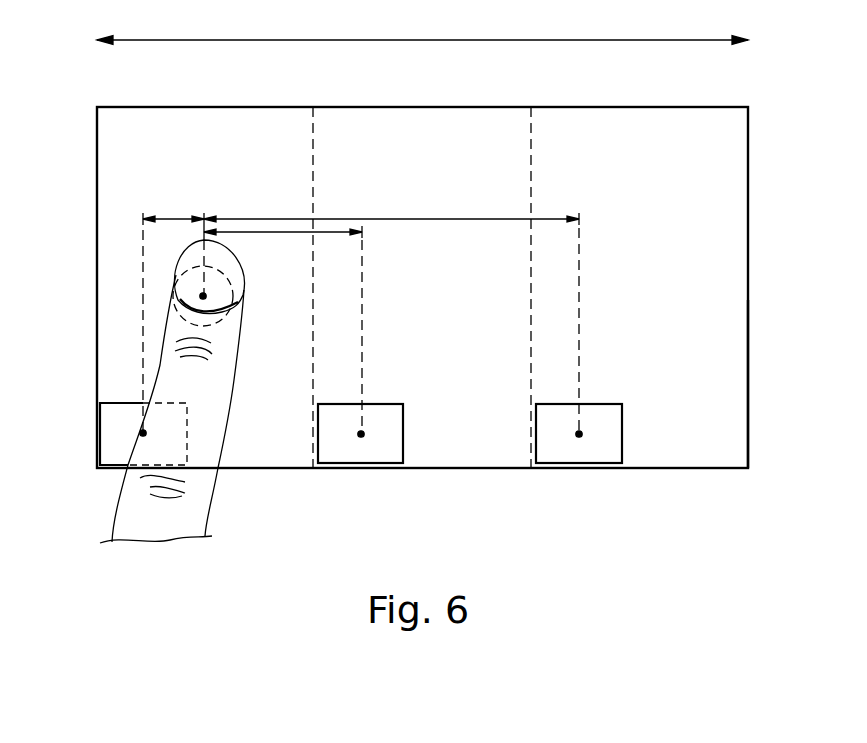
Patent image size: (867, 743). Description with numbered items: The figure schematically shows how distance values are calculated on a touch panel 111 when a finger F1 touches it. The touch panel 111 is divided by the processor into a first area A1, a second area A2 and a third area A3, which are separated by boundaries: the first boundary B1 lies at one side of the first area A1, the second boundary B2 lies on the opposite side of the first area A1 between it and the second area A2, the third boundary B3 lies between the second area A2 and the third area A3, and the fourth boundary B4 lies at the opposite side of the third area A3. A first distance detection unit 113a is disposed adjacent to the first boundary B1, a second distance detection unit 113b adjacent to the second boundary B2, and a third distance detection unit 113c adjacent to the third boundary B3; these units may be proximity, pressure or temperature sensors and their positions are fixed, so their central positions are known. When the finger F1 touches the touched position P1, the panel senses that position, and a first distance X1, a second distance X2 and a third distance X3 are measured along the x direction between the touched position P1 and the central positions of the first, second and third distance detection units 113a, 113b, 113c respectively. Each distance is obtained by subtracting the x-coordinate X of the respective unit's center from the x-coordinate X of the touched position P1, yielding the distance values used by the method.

The touch panel 111 is at (472, 122).
The first area A1 is at (225, 158).
The second area A2 is at (441, 158).
The third area A3 is at (659, 158).
The x-coordinate X is at (422, 27).
The first distance X1 is at (173, 310).
The second distance X2 is at (283, 330).
The third distance X3 is at (391, 311).
The finger F1 is at (165, 368).
The touched position P1 is at (203, 296).
The first boundary B1 is at (96, 458).
The second boundary B2 is at (313, 437).
The third boundary B3 is at (528, 433).
The fourth boundary B4 is at (748, 404).
The first distance detection unit 113a is at (121, 425).
The second distance detection unit 113b is at (348, 453).
The third distance detection unit 113c is at (566, 453).